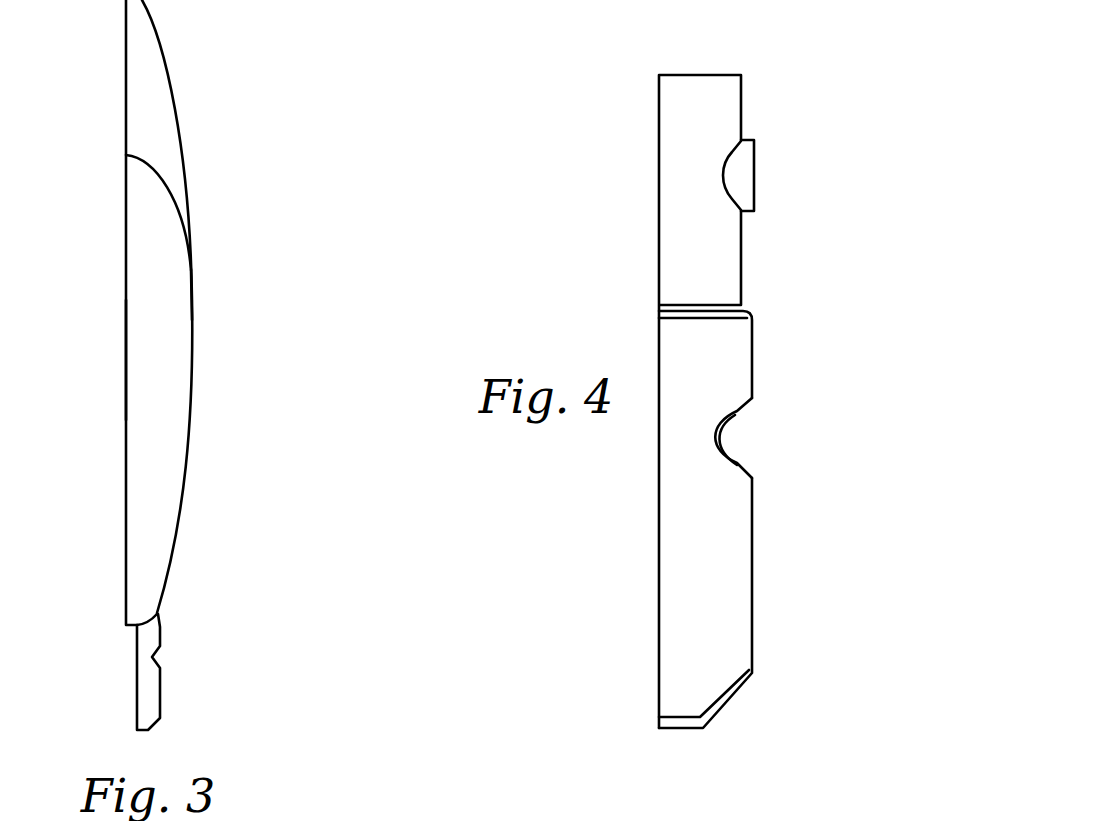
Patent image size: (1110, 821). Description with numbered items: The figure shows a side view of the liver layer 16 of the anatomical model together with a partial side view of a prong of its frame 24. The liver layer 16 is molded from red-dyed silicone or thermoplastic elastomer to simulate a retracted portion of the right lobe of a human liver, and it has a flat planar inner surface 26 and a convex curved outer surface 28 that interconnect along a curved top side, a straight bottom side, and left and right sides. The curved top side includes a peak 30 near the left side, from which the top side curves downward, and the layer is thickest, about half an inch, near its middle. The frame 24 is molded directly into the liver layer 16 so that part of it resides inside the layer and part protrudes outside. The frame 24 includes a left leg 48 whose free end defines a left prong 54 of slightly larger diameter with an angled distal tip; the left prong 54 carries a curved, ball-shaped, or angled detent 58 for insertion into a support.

In FIG. 3, the liver layer 16 is at (200, 203).
In FIG. 3, the frame 24 is at (163, 698).
In FIG. 3, the inner surface 26 is at (126, 366).
In FIG. 3, the outer surface 28 is at (193, 315).
In FIG. 3, the peak 30 is at (145, 27).
In FIG. 4, the left leg 48 is at (741, 270).
In FIG. 4, the left prong 54 is at (752, 563).
In FIG. 4, the detent 58 is at (737, 417).